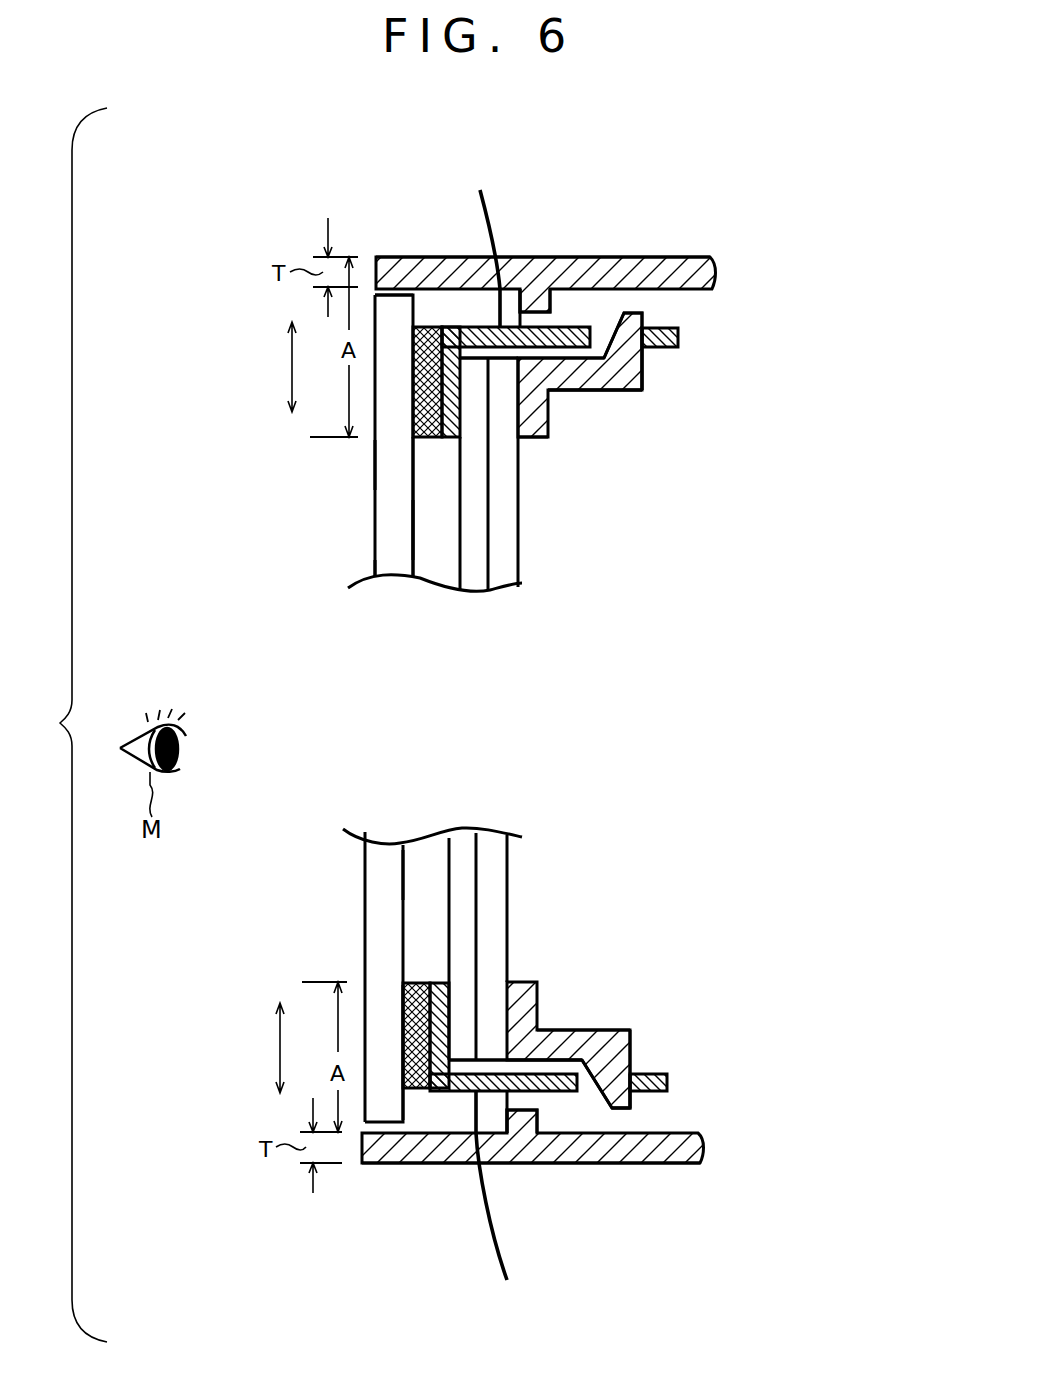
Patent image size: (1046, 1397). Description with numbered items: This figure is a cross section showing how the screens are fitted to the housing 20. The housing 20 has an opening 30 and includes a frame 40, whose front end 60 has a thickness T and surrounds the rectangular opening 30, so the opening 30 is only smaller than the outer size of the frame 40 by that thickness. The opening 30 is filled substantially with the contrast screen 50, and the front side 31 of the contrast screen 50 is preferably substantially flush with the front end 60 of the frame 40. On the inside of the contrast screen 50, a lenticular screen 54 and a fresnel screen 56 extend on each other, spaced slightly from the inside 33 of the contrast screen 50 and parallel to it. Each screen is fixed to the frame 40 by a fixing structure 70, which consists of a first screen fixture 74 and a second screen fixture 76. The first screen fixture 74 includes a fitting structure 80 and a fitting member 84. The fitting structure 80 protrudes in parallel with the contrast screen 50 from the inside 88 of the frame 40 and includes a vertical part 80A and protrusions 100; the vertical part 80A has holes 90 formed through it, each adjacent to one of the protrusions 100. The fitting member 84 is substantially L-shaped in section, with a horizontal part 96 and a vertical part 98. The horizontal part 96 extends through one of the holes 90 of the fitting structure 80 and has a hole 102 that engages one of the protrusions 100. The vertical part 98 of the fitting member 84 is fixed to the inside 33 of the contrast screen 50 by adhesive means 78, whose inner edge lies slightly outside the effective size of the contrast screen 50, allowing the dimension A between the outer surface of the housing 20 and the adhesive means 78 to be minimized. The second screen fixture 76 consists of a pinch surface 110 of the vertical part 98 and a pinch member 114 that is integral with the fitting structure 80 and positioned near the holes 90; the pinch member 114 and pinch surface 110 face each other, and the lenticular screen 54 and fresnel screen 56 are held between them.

The housing 20 is at (680, 194).
The opening 30 is at (375, 613).
The front side 31 is at (373, 462).
The inside 33 is at (422, 522).
The frame 40 is at (590, 256).
The contrast screen 50 is at (388, 517).
The lenticular screen 54 is at (475, 577).
The fresnel screen 56 is at (505, 569).
The front end 60 is at (377, 286).
The fixing structure 70 is at (746, 385).
The first screen fixture 74 is at (552, 316).
The second screen fixture 76 is at (548, 420).
The adhesive means 78 is at (432, 325).
The fitting structure 80 is at (680, 329).
The vertical part 80A is at (533, 288).
The fitting member 84 is at (500, 734).
The inside 88 is at (490, 300).
The hole 90 is at (633, 255).
The horizontal part 96 is at (575, 393).
The vertical part 98 is at (447, 437).
The protrusion 100 is at (680, 347).
The hole 102 is at (615, 392).
The pinch surface 110 is at (460, 418).
The pinch member 114 is at (528, 438).